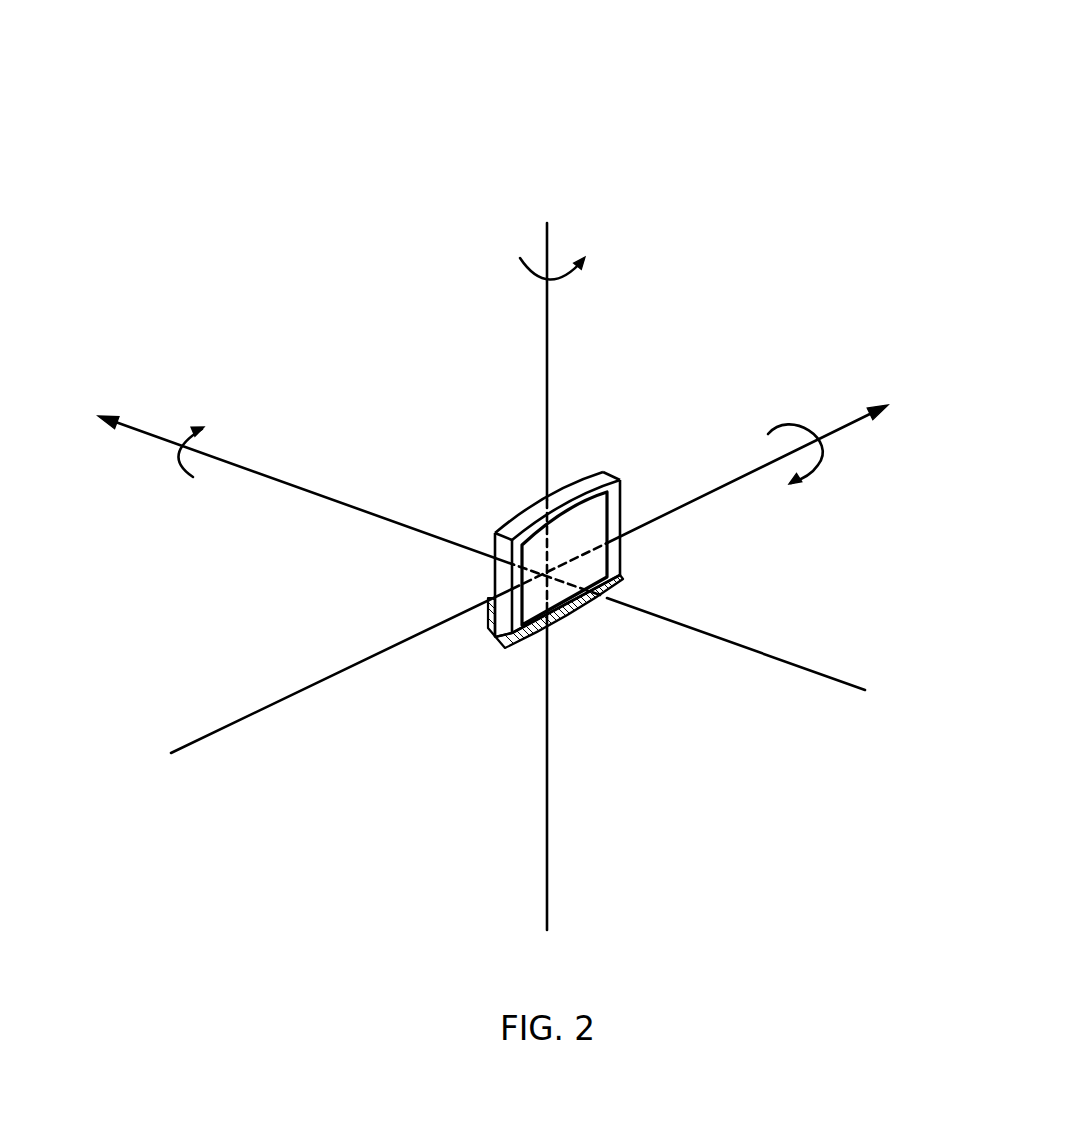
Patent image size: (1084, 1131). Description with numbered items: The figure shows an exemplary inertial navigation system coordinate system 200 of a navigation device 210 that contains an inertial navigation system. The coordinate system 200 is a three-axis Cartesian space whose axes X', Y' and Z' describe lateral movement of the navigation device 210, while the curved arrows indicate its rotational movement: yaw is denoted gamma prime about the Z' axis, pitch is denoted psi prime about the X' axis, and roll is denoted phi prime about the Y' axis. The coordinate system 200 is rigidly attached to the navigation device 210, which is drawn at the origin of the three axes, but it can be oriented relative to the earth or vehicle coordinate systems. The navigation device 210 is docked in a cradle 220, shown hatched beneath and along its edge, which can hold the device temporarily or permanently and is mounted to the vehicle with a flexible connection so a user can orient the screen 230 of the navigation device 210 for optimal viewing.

The inertial navigation system coordinate system 200 is at (761, 89).
The navigation device 210 is at (601, 471).
The cradle 220 is at (571, 620).
The screen 230 is at (593, 522).